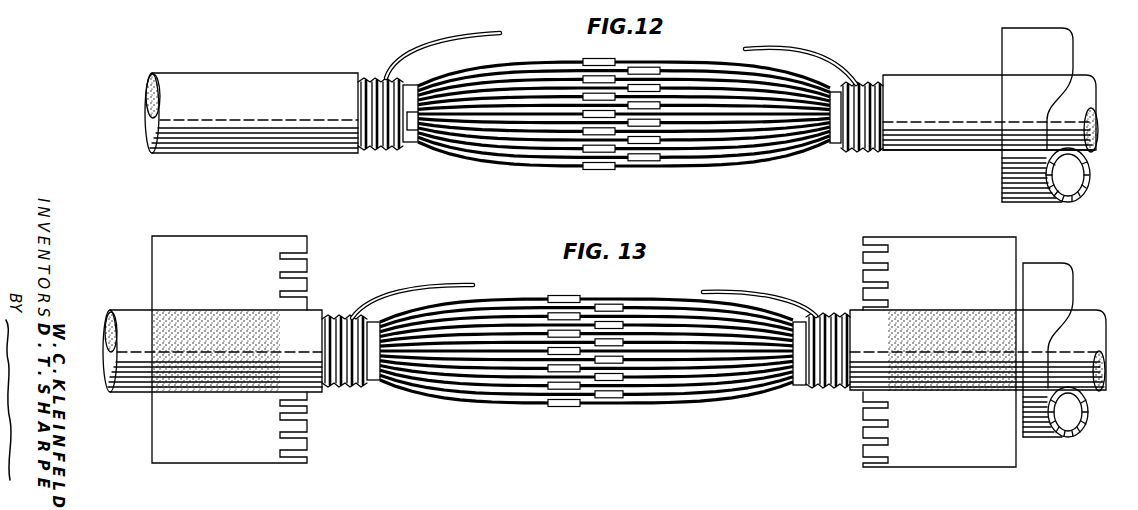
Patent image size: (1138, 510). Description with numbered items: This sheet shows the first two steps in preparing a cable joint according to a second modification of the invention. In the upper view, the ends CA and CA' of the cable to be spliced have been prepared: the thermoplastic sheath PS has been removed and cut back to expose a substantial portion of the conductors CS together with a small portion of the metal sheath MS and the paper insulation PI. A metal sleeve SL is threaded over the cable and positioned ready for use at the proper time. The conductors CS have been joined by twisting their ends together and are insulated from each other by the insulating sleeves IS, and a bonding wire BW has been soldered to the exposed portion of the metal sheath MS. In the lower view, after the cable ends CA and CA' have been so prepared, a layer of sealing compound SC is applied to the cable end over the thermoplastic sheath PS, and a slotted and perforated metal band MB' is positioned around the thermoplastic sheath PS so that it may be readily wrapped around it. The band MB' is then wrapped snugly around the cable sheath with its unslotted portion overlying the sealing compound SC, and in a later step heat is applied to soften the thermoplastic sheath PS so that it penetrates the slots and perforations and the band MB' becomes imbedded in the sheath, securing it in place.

In FIG. 12, the cable end CA is at (123, 96).
In FIG. 12, the cable end CA' is at (1108, 130).
In FIG. 12, the thermoplastic sheath PS is at (253, 82).
In FIG. 13, the thermoplastic sheath PS is at (136, 322).
In FIG. 12, the metal sheath MS is at (373, 151).
In FIG. 13, the metal sheath MS is at (342, 388).
In FIG. 12, the paper insulation PI is at (405, 143).
In FIG. 13, the paper insulation PI is at (375, 381).
In FIG. 12, the conductors CS is at (517, 151).
In FIG. 13, the conductors CS is at (484, 397).
In FIG. 12, the insulating sleeves IS is at (645, 156).
In FIG. 13, the insulating sleeves IS is at (613, 397).
In FIG. 12, the bonding wire BW is at (446, 36).
In FIG. 13, the bonding wire BW is at (436, 286).
In FIG. 12, the metal sleeve SL is at (1040, 40).
In FIG. 13, the metal sleeve SL is at (1048, 275).
In FIG. 13, the slotted and perforated metal band MB' is at (584, 335).
In FIG. 13, the sealing compound SC is at (216, 393).